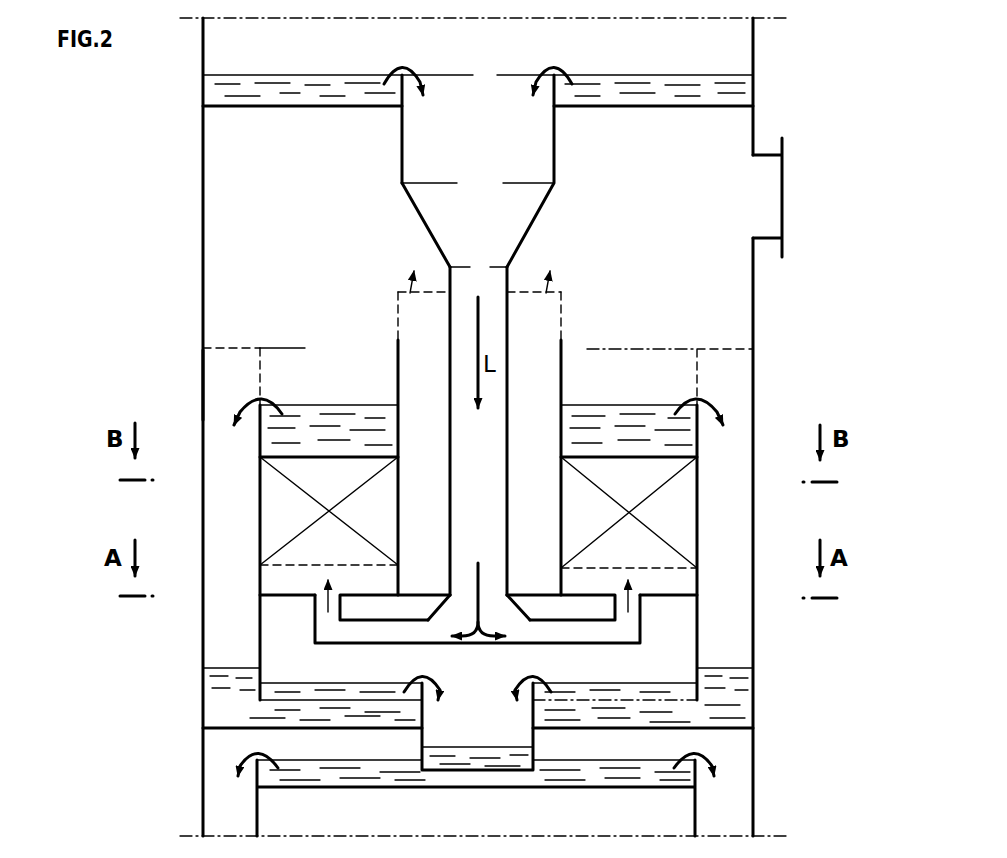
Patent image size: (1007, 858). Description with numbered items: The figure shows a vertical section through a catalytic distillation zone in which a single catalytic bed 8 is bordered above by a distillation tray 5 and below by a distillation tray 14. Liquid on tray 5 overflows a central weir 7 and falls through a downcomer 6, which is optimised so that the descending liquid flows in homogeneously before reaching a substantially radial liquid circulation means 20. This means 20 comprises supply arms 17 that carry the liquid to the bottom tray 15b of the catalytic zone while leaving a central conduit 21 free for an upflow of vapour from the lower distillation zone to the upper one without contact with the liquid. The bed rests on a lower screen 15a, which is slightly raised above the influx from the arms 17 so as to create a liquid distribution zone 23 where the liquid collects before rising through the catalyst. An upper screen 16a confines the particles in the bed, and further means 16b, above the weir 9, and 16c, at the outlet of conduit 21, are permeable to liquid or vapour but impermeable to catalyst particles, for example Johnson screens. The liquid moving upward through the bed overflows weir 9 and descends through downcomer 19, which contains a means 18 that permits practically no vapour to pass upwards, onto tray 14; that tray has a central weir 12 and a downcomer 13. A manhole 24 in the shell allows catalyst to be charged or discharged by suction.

The distillation tray 5 is at (253, 107).
The downcomer 6 is at (532, 152).
The central weir 7 is at (403, 100).
The catalytic bed 8 is at (334, 502).
The weir 9 is at (690, 440).
The central weir 12 is at (506, 762).
The downcomer 13 is at (476, 730).
The distillation tray 14 is at (205, 746).
The lower screen 15a is at (652, 565).
The tray 15b is at (673, 597).
The upper screen 16a is at (317, 455).
The means preventing catalyst spilling 16b is at (228, 346).
The means preventing catalyst spilling 16c is at (396, 291).
The supply arms 17 is at (313, 628).
The means 18 is at (258, 697).
The downcomer 19 is at (218, 385).
The substantially radial liquid circulation means 20 is at (431, 588).
The conduit 21 is at (523, 336).
The liquid distribution zone 23 is at (292, 581).
The manhole 24 is at (782, 203).